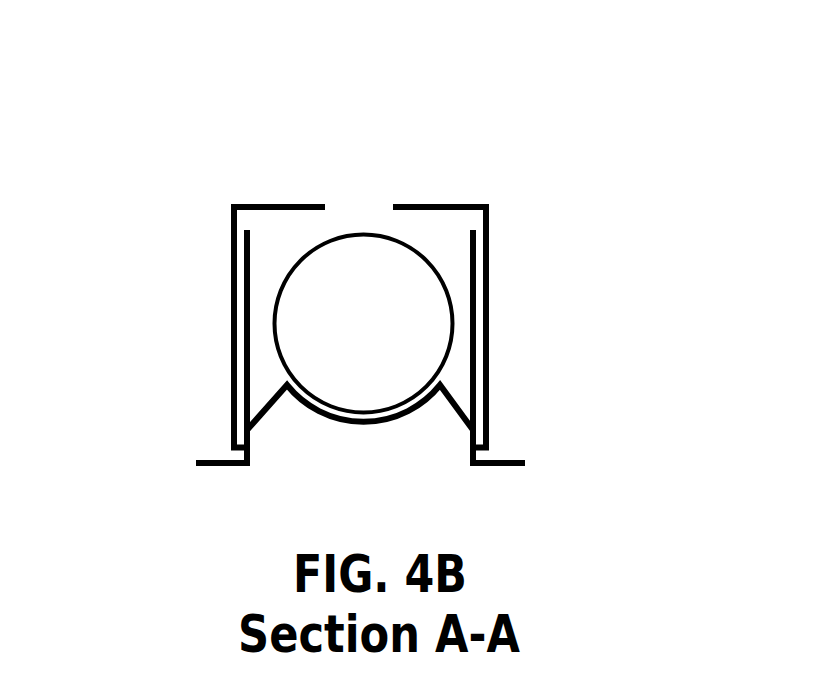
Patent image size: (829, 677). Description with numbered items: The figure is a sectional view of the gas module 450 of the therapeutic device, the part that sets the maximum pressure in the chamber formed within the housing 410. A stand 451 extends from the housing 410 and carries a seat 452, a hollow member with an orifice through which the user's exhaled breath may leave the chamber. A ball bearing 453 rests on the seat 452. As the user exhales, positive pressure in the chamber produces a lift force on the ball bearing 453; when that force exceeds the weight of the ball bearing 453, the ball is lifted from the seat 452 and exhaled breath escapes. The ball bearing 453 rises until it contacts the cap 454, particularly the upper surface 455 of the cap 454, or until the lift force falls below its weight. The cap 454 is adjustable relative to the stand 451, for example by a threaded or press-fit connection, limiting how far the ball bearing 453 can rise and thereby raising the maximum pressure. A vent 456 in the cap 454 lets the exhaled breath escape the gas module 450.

The gas module 450 is at (205, 61).
The stand 451 is at (259, 240).
The seat 452 is at (386, 440).
The ball bearing 453 is at (436, 325).
The cap 454 is at (229, 298).
The upper surface 455 is at (437, 214).
The vent 456 is at (349, 208).
The housing 410 is at (204, 474).